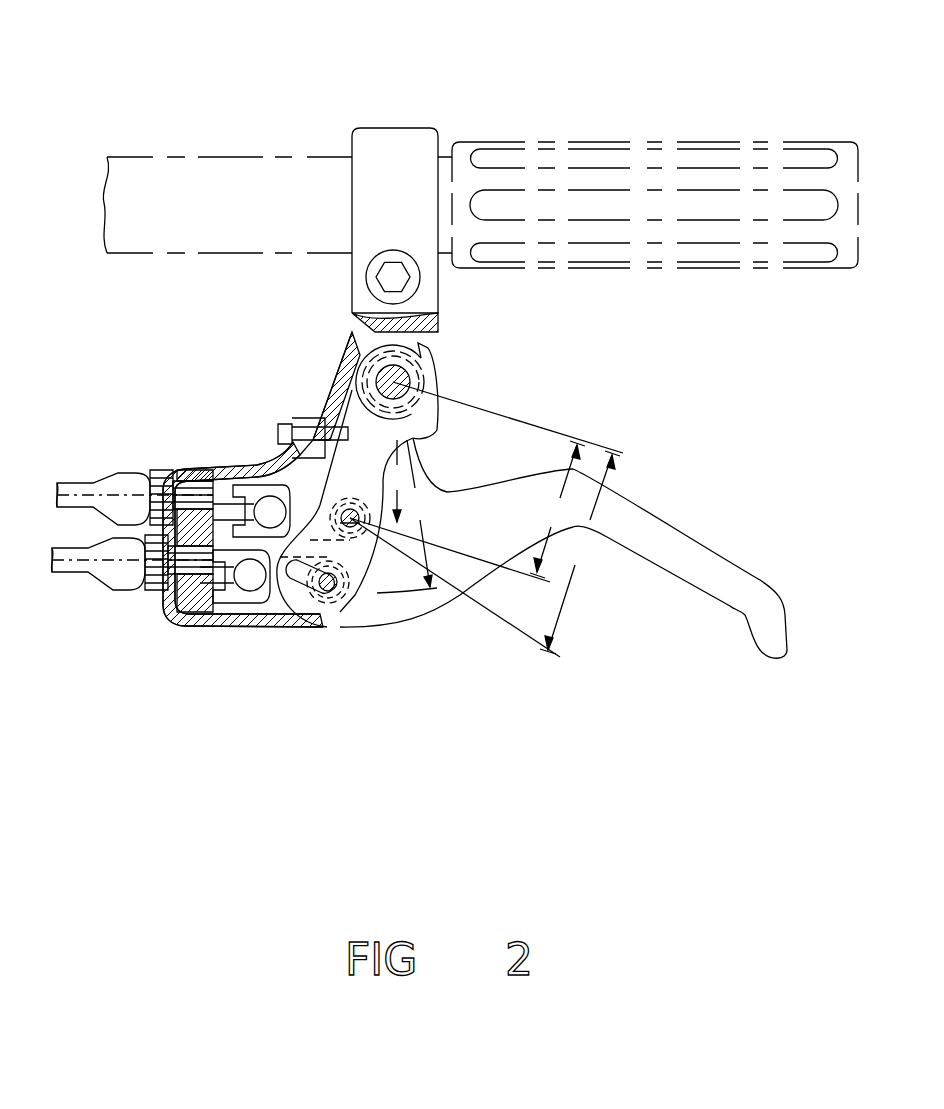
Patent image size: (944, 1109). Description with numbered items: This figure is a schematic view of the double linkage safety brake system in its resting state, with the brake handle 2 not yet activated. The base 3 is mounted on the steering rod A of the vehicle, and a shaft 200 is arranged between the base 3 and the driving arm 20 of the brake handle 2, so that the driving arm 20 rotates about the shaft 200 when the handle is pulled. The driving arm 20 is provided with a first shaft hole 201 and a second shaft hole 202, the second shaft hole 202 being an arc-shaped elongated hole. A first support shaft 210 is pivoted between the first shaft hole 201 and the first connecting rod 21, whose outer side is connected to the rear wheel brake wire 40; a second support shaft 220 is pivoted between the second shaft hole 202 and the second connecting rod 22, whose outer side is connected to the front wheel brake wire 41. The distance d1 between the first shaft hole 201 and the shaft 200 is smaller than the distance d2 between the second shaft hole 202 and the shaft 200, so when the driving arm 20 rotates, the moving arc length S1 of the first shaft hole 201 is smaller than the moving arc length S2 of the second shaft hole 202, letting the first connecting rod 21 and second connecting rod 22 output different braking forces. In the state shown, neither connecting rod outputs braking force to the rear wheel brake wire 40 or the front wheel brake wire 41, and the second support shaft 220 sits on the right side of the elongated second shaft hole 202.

The brake handle 2 is at (687, 547).
The base 3 is at (393, 147).
The steering rod A is at (239, 174).
The driving arm 20 is at (360, 413).
The first connecting rod 21 is at (243, 493).
The second connecting rod 22 is at (175, 622).
The rear wheel brake wire 40 is at (94, 492).
The front wheel brake wire 41 is at (72, 565).
The shaft 200 is at (413, 368).
The first shaft hole 201 is at (355, 527).
The second shaft hole 202 is at (300, 608).
The first support shaft 210 is at (338, 508).
The second support shaft 220 is at (325, 592).
The moving arc length of the first shaft hole S1 is at (373, 481).
The moving arc length of the second shaft hole S2 is at (419, 513).
The distance between the first shaft hole and the shaft d1 is at (557, 509).
The distance between the second shaft hole and the shaft d2 is at (580, 552).